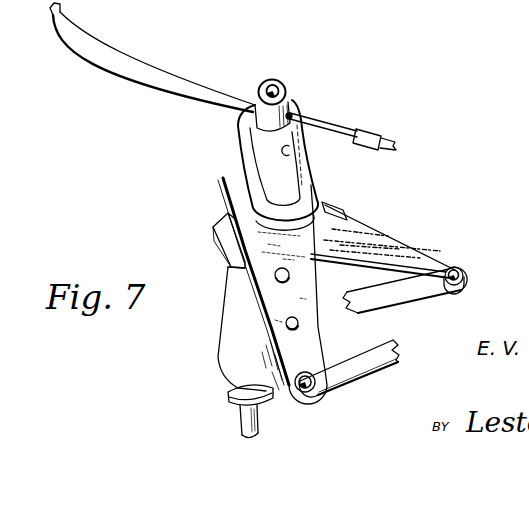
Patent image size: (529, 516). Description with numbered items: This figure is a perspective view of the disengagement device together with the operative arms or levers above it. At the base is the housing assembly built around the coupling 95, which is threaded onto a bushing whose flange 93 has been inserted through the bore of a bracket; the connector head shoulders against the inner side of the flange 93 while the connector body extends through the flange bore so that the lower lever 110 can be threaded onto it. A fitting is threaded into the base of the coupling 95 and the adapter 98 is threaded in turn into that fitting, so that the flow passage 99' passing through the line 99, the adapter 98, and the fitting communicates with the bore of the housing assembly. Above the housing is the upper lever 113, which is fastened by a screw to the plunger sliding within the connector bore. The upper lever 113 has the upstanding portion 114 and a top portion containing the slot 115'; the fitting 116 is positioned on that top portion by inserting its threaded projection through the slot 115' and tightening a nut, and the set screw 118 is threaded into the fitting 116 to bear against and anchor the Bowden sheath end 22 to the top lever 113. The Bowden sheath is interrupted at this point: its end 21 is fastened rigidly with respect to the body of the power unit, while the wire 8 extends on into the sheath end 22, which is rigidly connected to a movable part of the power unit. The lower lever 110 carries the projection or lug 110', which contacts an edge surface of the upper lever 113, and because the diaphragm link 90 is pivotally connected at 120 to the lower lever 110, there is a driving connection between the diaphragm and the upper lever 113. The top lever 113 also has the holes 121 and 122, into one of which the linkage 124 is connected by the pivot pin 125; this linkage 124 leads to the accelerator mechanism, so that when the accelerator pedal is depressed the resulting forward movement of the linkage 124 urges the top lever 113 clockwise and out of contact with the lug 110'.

The wire 8 is at (337, 126).
The sheath end 21 is at (367, 128).
The sheath end 22 is at (247, 103).
The link 90 is at (416, 292).
The flange 93 is at (217, 243).
The coupling 95 is at (230, 316).
The adapter 98 is at (233, 399).
The line 99 is at (227, 424).
The flow passage 99' is at (256, 452).
The lower lever 110 is at (383, 241).
The lug 110' is at (382, 203).
The upper lever 113 is at (318, 322).
The upstanding portion 114 is at (243, 172).
The slot 115' is at (315, 150).
The fitting 116 is at (288, 88).
The set screw 118 is at (277, 82).
The pivotal connection 120 is at (458, 268).
The hole 121 is at (288, 281).
The hole 122 is at (292, 329).
The linkage 124 is at (368, 367).
The pivot pin 125 is at (312, 390).